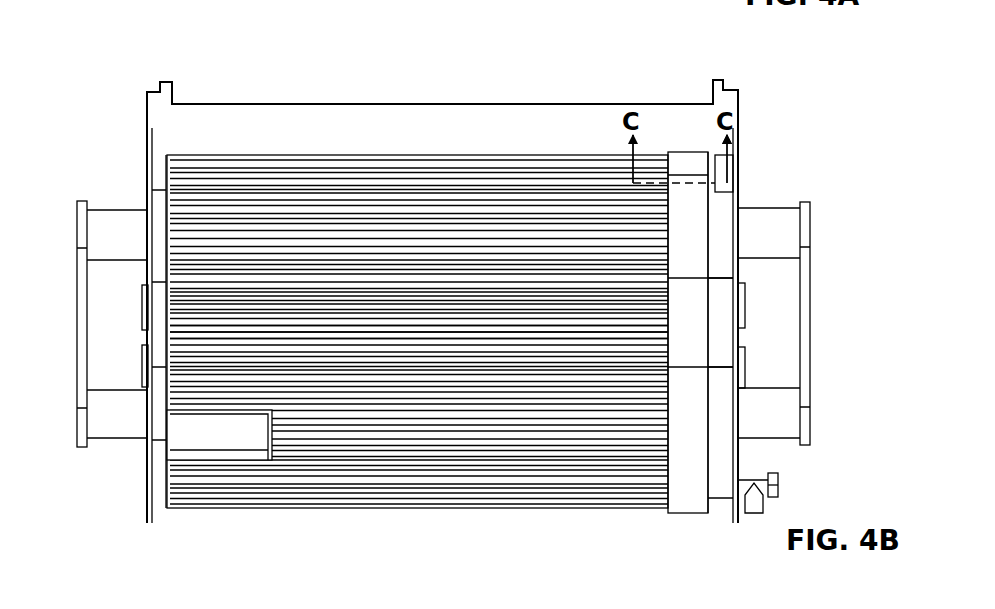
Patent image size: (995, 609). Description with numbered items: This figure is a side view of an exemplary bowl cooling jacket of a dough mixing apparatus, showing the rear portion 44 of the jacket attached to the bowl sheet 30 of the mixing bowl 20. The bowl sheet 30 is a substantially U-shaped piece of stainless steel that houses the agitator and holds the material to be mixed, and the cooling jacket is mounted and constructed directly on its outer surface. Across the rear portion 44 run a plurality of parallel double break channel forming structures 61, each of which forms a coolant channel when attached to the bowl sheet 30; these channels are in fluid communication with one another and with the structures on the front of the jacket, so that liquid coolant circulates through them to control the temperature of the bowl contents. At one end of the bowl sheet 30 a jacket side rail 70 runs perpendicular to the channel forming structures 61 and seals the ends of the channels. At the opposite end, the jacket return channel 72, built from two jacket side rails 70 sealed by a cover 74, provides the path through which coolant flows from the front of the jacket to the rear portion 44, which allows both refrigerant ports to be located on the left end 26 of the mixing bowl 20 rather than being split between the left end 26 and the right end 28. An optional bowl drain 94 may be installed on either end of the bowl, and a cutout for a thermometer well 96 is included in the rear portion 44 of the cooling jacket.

The mixing bowl 20 is at (150, 32).
The left end 26 is at (740, 198).
The right end 28 is at (148, 165).
The bowl sheet 30 is at (431, 140).
The rear portion 44 is at (297, 490).
The double break channel forming structure 61 is at (190, 335).
The jacket side rail 70 is at (158, 335).
The jacket return channel 72 is at (687, 514).
The cover 74 is at (700, 340).
The bowl drain 94 is at (782, 484).
The thermometer well 96 is at (200, 440).